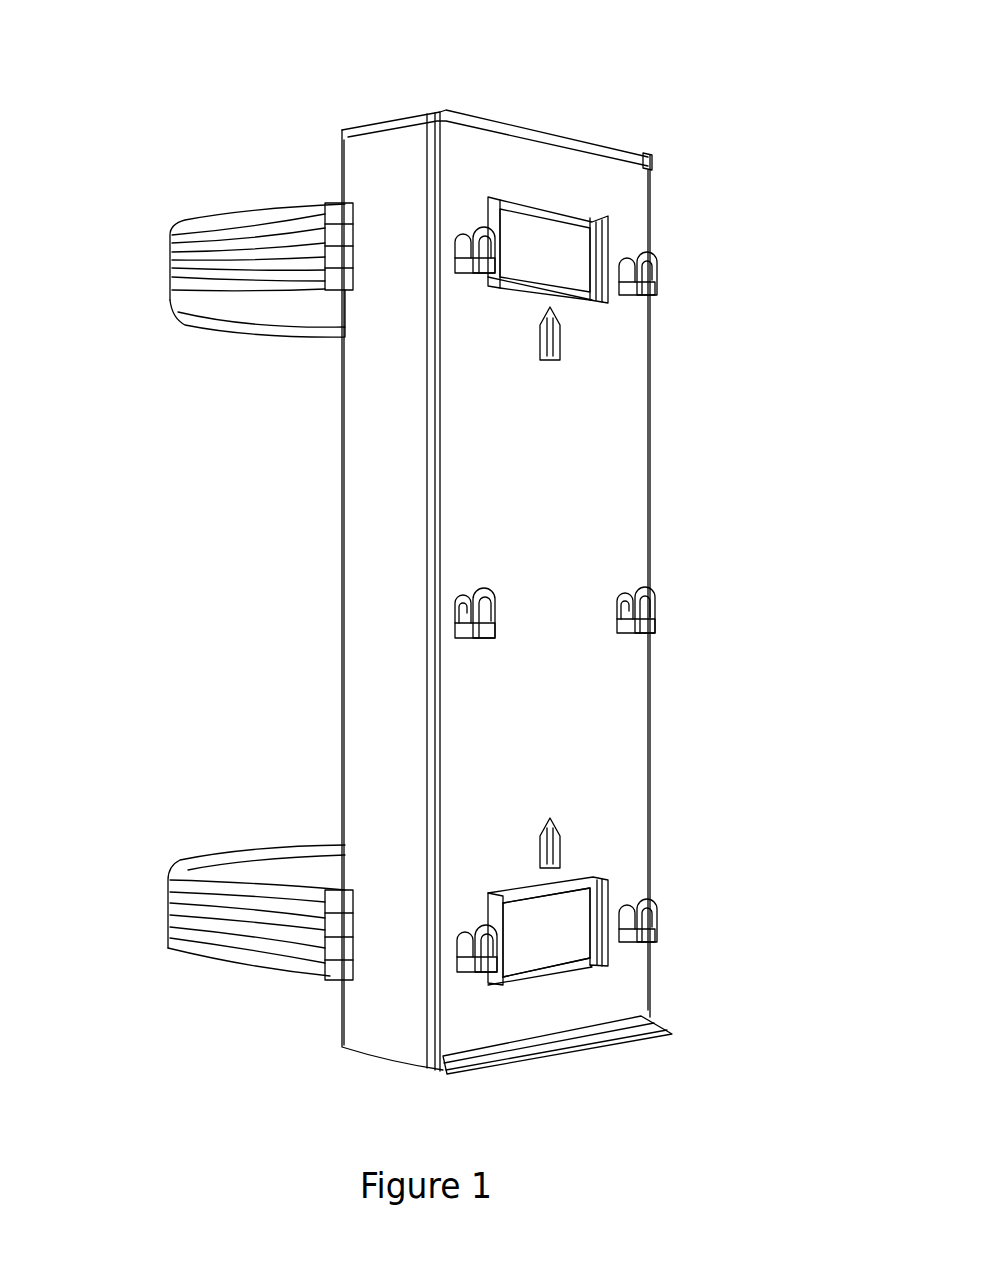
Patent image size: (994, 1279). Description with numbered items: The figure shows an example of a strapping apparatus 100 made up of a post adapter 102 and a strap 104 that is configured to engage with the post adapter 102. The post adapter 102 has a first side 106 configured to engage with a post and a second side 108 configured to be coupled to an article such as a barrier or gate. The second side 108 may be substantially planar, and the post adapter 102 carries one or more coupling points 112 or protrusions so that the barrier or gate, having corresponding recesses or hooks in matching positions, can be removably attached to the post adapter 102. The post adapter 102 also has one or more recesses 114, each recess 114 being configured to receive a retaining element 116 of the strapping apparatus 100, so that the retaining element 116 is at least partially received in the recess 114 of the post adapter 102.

The strapping apparatus 100 is at (232, 128).
The post adapter 102 is at (651, 236).
The strap 104 is at (168, 273).
The first side 106 is at (280, 504).
The second side 108 is at (677, 494).
The coupling points 112 is at (455, 622).
The recess 114 is at (491, 204).
The retaining element 116 is at (565, 235).